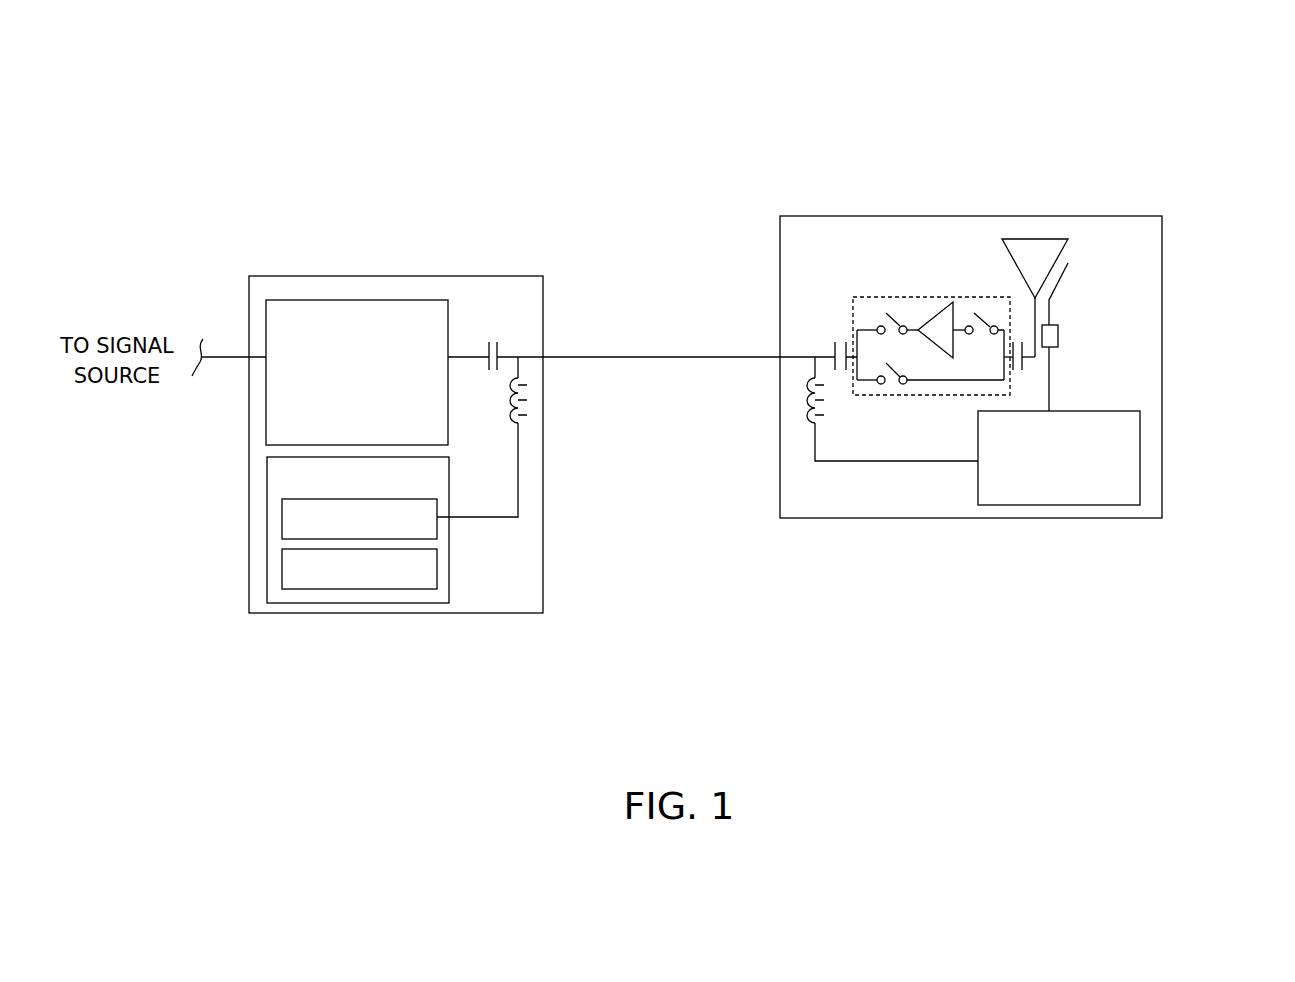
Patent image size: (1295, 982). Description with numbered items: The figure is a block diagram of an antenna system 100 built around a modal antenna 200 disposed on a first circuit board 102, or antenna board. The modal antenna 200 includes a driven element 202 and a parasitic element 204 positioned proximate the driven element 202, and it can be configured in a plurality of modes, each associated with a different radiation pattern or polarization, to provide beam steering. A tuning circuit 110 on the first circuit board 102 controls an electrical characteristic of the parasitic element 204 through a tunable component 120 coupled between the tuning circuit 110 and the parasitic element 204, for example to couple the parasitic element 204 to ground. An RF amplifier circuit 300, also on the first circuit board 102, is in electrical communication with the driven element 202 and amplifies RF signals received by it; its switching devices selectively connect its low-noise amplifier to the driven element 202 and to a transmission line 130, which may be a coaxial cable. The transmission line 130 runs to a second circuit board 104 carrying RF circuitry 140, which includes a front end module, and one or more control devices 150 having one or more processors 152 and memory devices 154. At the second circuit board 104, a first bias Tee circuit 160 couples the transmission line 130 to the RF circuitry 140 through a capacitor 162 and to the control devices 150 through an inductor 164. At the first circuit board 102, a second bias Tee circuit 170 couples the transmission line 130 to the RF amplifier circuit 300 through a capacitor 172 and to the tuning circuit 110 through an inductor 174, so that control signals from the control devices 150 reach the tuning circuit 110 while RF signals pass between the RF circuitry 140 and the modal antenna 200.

The antenna system 100 is at (191, 146).
The first circuit board 102 is at (921, 216).
The second circuit board 104 is at (325, 276).
The tuning circuit 110 is at (1059, 458).
The tunable component 120 is at (1060, 345).
The transmission line 130 is at (637, 357).
The RF circuitry 140 is at (357, 372).
The control devices 150 is at (358, 530).
The processors 152 is at (359, 519).
The memory devices 154 is at (359, 569).
The first bias Tee circuit 160 is at (534, 366).
The capacitor 162 is at (500, 350).
The inductor 164 is at (528, 400).
The second bias Tee circuit 170 is at (781, 377).
The capacitor 172 is at (835, 350).
The inductor 174 is at (805, 410).
The modal antenna 200 is at (1144, 286).
The driven element 202 is at (1070, 249).
The parasitic element 204 is at (1062, 275).
The RF amplifier circuit 300 is at (880, 297).